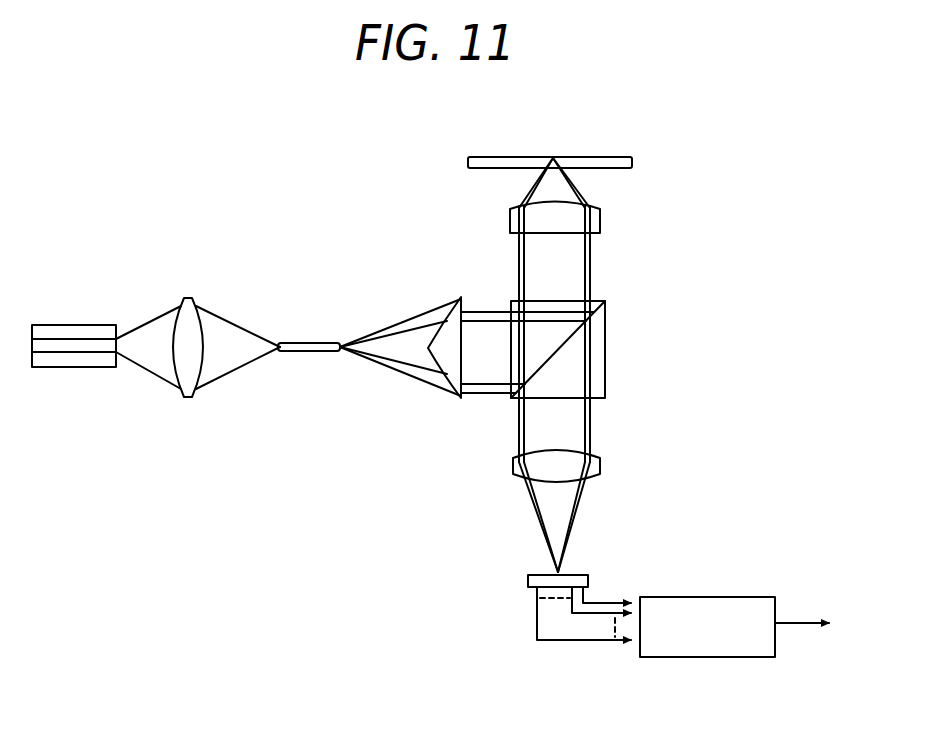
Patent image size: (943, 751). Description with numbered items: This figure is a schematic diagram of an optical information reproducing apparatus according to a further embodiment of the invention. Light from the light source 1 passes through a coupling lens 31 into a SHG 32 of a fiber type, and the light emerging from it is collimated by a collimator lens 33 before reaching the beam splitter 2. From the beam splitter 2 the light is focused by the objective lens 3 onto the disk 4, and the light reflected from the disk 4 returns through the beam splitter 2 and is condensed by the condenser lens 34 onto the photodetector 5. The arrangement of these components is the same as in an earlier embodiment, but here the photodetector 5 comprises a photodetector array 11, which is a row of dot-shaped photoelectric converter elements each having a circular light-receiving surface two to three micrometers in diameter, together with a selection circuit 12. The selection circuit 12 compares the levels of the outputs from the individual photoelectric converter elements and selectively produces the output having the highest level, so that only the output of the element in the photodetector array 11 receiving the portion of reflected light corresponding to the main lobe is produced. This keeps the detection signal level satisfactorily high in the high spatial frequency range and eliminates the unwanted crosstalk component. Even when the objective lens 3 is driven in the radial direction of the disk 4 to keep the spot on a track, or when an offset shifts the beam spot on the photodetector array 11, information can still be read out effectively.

The light source 1 is at (104, 323).
The coupling lens 31 is at (193, 298).
The SHG of a fiber type 32 is at (328, 342).
The collimator lens 33 is at (460, 296).
The beam splitter 2 is at (607, 318).
The objective lens 3 is at (602, 222).
The disk 4 is at (617, 155).
The condenser lens 34 is at (602, 465).
The photodetector array 11 is at (590, 582).
The photodetector 5 is at (528, 611).
The selection circuit 12 is at (757, 596).